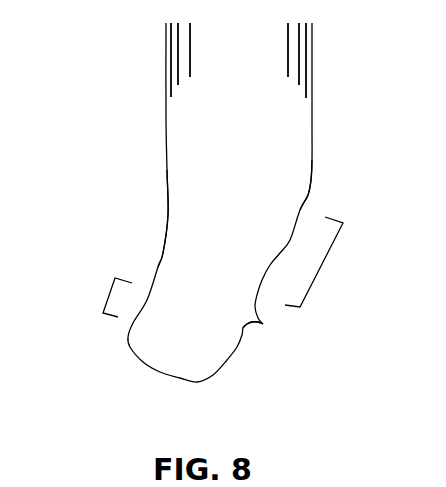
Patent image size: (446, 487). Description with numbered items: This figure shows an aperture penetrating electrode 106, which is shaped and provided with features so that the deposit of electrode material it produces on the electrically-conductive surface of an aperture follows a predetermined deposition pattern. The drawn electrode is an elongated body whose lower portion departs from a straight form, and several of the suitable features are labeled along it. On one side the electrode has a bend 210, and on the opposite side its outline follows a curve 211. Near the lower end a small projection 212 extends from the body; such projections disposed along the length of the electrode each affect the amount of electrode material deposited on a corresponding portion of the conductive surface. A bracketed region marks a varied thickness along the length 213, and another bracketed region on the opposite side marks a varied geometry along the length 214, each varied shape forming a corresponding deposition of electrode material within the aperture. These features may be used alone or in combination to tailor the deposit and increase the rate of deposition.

The aperture penetrating electrode 106 is at (247, 182).
The bend 210 is at (163, 253).
The curve 211 is at (310, 188).
The projection 212 is at (263, 324).
The varied thickness along the length 213 is at (320, 270).
The varied geometry along the length 214 is at (108, 292).